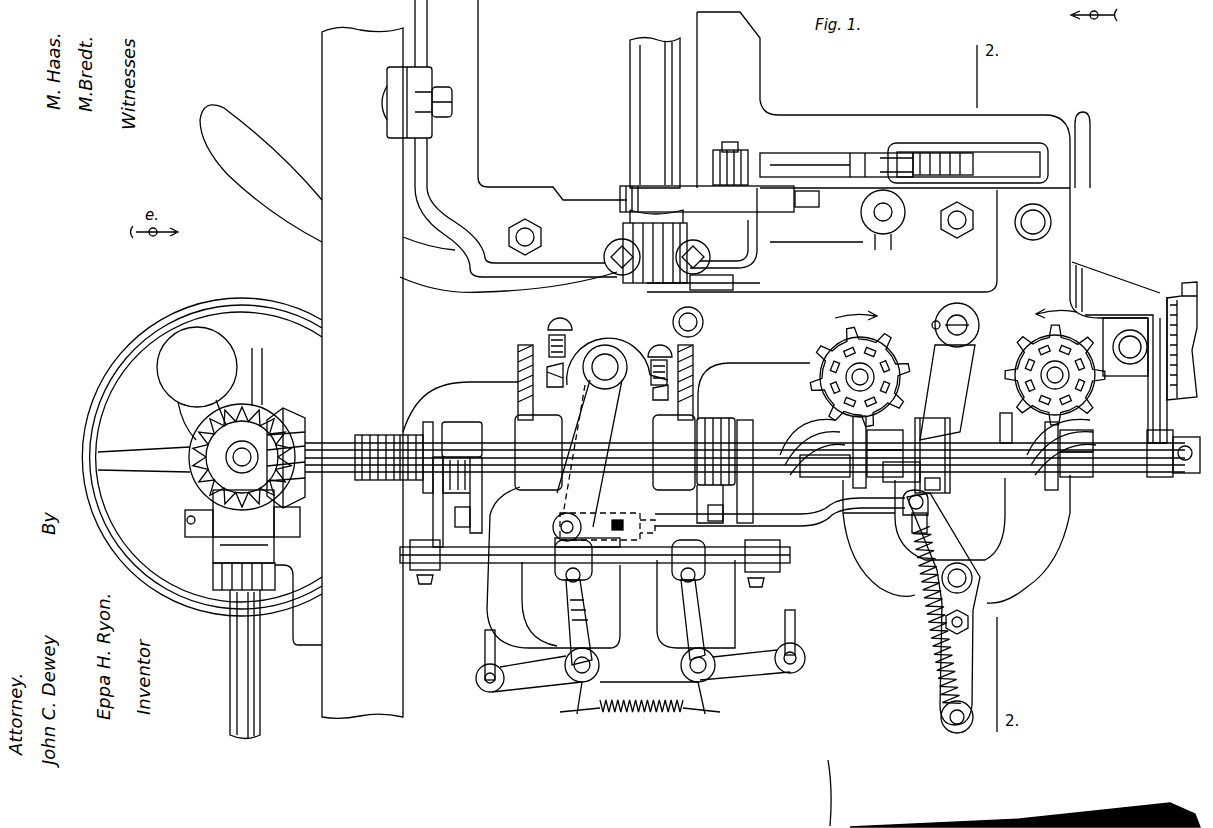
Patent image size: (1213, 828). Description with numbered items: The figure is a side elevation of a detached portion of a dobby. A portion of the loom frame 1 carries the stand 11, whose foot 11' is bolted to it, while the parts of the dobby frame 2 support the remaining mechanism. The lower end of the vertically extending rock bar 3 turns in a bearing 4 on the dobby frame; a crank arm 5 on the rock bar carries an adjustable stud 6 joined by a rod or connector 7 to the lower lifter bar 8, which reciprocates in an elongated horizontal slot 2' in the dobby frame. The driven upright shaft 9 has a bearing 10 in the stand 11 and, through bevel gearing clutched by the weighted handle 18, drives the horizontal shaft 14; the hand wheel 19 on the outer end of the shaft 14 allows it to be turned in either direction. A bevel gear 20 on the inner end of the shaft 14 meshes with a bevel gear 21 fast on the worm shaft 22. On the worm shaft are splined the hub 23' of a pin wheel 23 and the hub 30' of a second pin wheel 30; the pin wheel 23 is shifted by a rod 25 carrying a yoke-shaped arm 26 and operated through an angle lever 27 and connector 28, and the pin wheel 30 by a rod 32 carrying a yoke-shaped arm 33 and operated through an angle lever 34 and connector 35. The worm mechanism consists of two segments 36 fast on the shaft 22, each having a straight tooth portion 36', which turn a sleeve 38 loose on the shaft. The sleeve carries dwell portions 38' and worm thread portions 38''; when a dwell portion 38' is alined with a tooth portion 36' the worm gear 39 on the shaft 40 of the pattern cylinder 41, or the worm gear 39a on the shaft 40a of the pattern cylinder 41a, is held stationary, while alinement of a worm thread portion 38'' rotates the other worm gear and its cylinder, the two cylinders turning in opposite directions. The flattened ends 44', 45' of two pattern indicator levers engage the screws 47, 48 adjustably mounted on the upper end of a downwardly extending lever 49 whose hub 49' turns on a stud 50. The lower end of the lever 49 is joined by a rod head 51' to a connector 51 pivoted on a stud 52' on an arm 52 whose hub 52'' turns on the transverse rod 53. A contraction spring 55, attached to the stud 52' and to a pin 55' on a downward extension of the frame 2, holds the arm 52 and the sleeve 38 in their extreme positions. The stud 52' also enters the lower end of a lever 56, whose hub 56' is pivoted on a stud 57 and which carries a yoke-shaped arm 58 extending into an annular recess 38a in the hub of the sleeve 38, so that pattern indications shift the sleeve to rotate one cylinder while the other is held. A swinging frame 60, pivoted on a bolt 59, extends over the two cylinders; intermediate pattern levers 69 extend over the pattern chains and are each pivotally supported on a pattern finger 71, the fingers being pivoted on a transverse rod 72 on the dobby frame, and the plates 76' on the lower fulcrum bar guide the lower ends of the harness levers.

The loom frame 1 is at (330, 68).
The dobby frame 2 is at (774, 324).
The elongated horizontal slot 2' is at (980, 130).
The rock bar 3 is at (645, 98).
The bearing 4 is at (650, 265).
The crank arm 5 is at (740, 198).
The stud 6 is at (726, 147).
The rod or connector 7 is at (805, 160).
The lower lifter bar 8 is at (962, 153).
The upright shaft 9 is at (246, 672).
The bearing 10 is at (240, 578).
The stand 11 is at (239, 530).
The foot or extension 11' is at (296, 607).
The horizontally extending shaft 14 is at (222, 480).
The weighted handle 18 is at (168, 352).
The hand wheel 19 is at (112, 378).
The bevel gear 20 is at (228, 462).
The bevel gear 21 is at (290, 420).
The worm shaft 22 is at (415, 465).
The pin wheel 23 is at (460, 527).
The hub 23' is at (470, 464).
The rod 25 is at (473, 565).
The yoke-shaped arm 26 is at (423, 528).
The angle lever 27 is at (695, 628).
The connector 28 is at (795, 628).
The second pin wheel 30 is at (742, 501).
The hub 30' is at (723, 457).
The rod 32 is at (780, 555).
The yoke-shaped arm 33 is at (750, 492).
The angle lever 34 is at (583, 620).
The connector 35 is at (487, 650).
The segments 36 is at (980, 477).
The straight tooth or thread portion 36' is at (935, 463).
The sleeve 38 is at (1000, 432).
The straight tooth or dwell portions 38' is at (906, 449).
The worm thread portions 38'' is at (941, 436).
The annular recess 38a is at (935, 458).
The worm gear 39 is at (815, 368).
The worm gear 39a is at (1040, 340).
The shaft 40 is at (864, 370).
The shaft 40a is at (1060, 368).
The pattern cylinder 41 is at (812, 385).
The pattern cylinder 41a is at (1015, 382).
The flattened inner end 44' is at (507, 379).
The flattened inner end 45' is at (706, 382).
The screw 47 is at (556, 325).
The screw 48 is at (672, 350).
The downwardly extending lever 49 is at (563, 453).
The hub 49' is at (607, 376).
The stud 50 is at (608, 360).
The connector 51 is at (730, 520).
The rod head 51' is at (591, 514).
The arm 52 is at (949, 609).
The stud 52' is at (895, 517).
The hub 52'' is at (918, 629).
The transverse rod 53 is at (948, 590).
The helically coiled contraction spring 55 is at (924, 614).
The pin 55' is at (942, 725).
The lever 56 is at (955, 392).
The hub 56' is at (966, 318).
The stud 57 is at (934, 320).
The yoke-shaped arm 58 is at (940, 480).
The bolt 59 is at (950, 230).
The swinging frame 60 is at (1183, 388).
The intermediate pattern levers 69 is at (1130, 290).
The pattern finger or indicator 71 is at (1082, 118).
The transverse rod 72 is at (873, 216).
The plates 76' is at (261, 173).